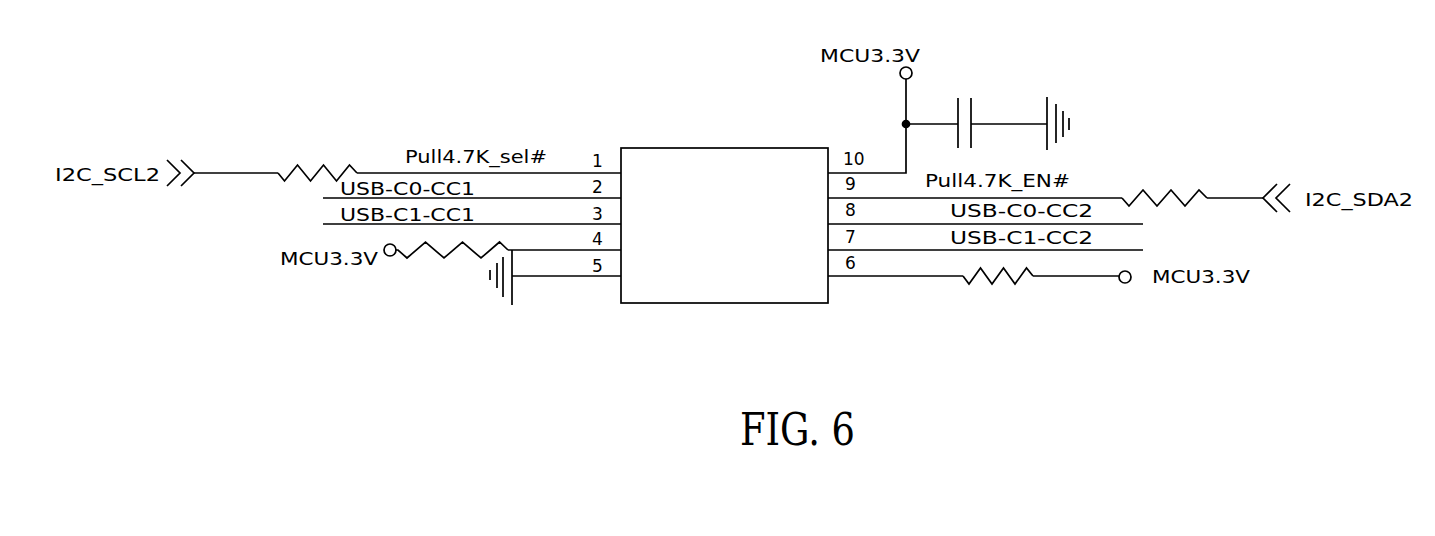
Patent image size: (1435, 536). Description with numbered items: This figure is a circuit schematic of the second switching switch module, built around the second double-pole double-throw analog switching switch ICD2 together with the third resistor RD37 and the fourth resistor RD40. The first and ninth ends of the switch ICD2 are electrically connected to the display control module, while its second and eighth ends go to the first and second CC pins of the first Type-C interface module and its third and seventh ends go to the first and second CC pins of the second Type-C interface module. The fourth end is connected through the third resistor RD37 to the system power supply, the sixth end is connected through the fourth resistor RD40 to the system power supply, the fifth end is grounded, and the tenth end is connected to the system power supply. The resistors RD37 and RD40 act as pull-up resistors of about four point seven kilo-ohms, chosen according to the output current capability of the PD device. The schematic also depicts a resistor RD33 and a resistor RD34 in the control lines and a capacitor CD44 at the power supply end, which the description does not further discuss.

The resistor RD33 (0R) on I2C_SCL2 line RD33 is at (318, 167).
The third resistor RD37 is at (484, 242).
The second double-pole double-throw analog switching switch ICD2 is at (720, 226).
The capacitor CD44 (100nF) decoupling CD44 is at (976, 100).
The resistor RD34 (0R) on I2C_SDA2 line RD34 is at (1147, 188).
The fourth resistor RD40 is at (1006, 268).